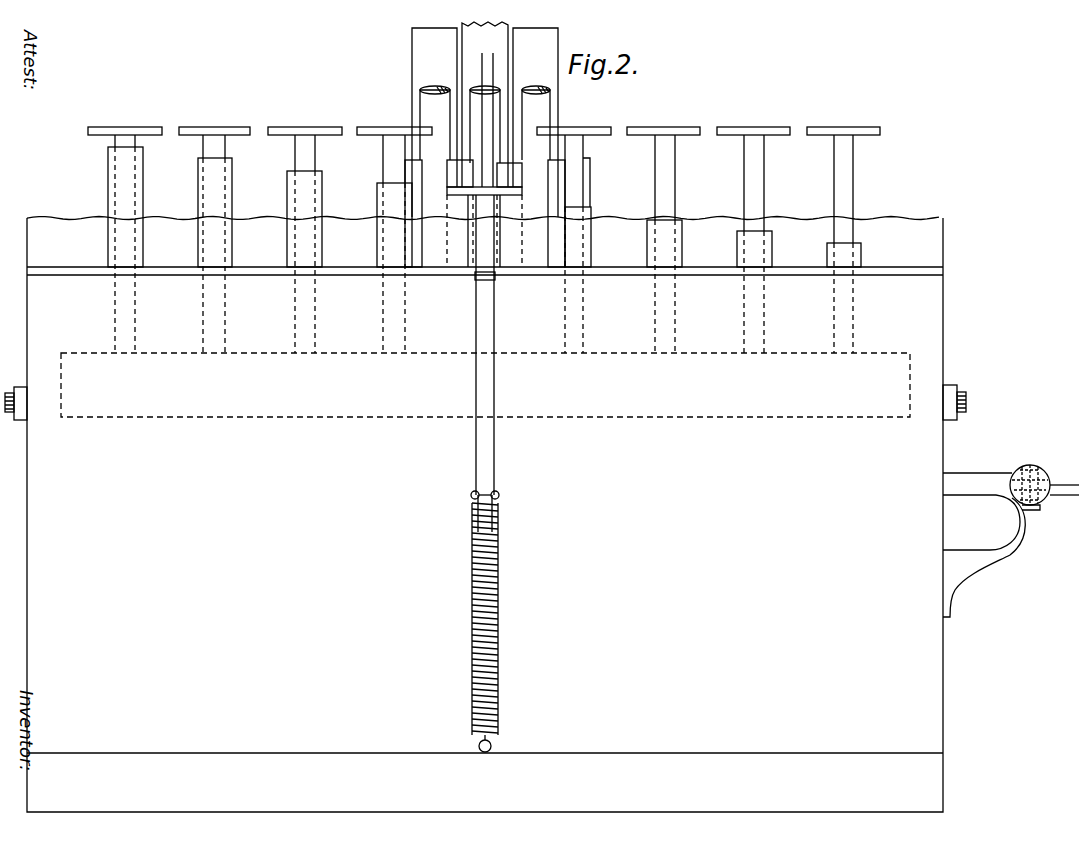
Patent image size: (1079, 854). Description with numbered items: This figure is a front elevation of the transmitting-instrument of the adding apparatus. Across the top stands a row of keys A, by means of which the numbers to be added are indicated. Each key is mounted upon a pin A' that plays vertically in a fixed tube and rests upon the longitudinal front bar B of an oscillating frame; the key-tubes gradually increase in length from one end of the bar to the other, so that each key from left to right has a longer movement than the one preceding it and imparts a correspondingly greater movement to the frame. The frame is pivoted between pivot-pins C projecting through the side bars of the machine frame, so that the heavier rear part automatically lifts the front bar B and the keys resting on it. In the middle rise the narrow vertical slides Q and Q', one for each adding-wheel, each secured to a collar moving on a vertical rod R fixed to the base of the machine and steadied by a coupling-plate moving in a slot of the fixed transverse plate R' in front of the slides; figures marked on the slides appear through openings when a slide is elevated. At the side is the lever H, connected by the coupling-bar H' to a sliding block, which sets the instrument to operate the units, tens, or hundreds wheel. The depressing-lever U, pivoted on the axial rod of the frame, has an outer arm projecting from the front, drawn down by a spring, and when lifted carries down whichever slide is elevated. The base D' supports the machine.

The key A is at (484, 121).
The pin A' is at (463, 189).
The front bar B is at (485, 385).
The pivot-pin C is at (496, 402).
The base plate D' is at (485, 515).
The lever H is at (1044, 484).
The coupling-bar H' is at (977, 484).
The slide Q is at (546, 122).
The slide Q' is at (485, 104).
The vertical rod R is at (485, 124).
The transverse plate R' is at (485, 213).
The depressing-lever U is at (494, 397).